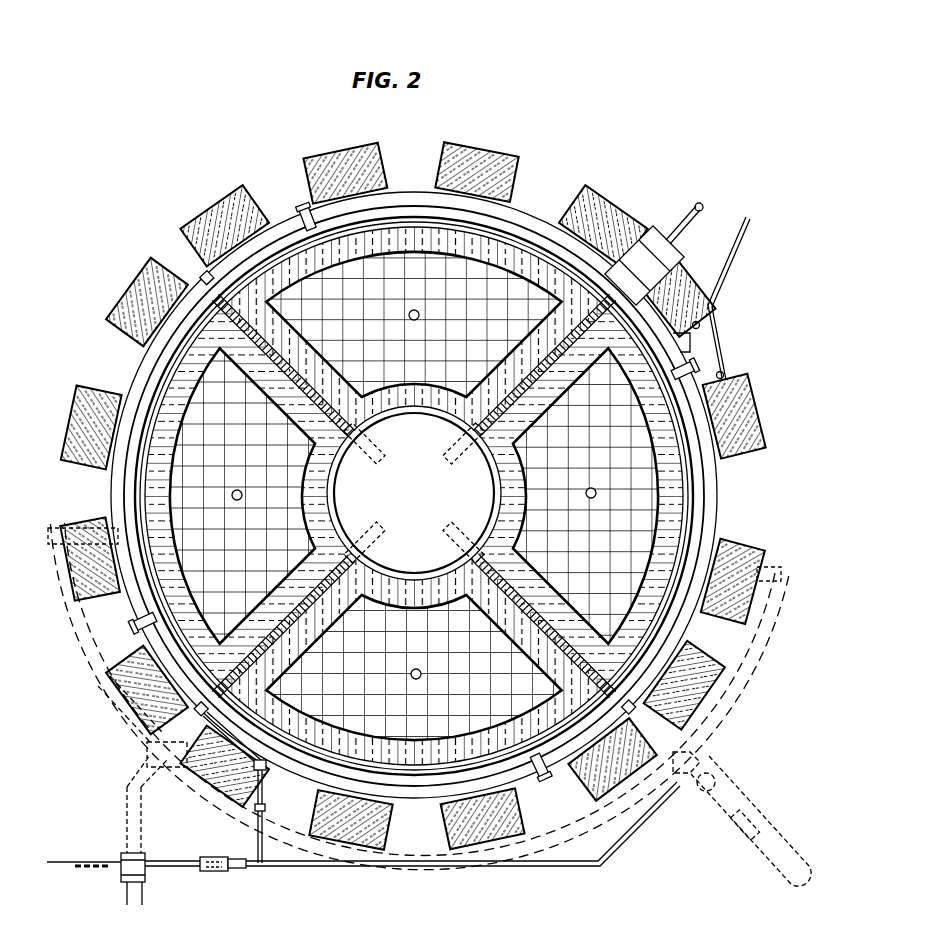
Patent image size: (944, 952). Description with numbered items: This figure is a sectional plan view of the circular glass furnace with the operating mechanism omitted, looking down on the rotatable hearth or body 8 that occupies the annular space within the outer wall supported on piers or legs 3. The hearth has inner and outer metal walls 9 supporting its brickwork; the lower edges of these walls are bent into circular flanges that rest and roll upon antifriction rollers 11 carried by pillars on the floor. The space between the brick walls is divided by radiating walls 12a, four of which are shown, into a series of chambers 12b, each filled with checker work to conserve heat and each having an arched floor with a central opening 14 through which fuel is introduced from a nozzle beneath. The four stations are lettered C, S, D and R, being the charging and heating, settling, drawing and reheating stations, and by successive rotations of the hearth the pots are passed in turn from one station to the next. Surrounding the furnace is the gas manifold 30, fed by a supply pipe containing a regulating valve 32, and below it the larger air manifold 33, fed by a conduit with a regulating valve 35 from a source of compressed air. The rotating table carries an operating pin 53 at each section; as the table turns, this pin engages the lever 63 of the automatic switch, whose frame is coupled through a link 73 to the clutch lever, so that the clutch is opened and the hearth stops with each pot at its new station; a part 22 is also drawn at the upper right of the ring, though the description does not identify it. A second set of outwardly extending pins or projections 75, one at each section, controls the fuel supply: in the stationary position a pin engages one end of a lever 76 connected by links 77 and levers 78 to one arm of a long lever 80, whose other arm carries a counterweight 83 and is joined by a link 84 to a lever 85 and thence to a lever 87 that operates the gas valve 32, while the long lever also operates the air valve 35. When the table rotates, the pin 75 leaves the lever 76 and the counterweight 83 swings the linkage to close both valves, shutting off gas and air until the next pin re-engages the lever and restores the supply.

The piers or legs 3 is at (700, 653).
The rotatable hearth or body 8 is at (657, 546).
The inner and outer metal walls 9 is at (716, 513).
The rollers 11 is at (315, 772).
The radiating walls 12a is at (318, 352).
The chambers 12b is at (414, 496).
The central openings 14 is at (414, 310).
The conduit 22 is at (704, 209).
The manifold 30 is at (112, 708).
The regulating valve 32 is at (124, 852).
The larger manifold 33 is at (86, 659).
The regulating valve 35 is at (706, 770).
The operating pin 53 is at (540, 780).
The lever 63 is at (700, 338).
The link 73 is at (750, 222).
The pins or projections 75 is at (636, 712).
The lever 76 is at (216, 729).
The links 77 is at (262, 808).
The levers 78 is at (266, 777).
The long lever 80 is at (335, 867).
The counterweight 83 is at (213, 857).
The link 84 is at (243, 869).
The lever 85 is at (173, 867).
The lever 87 is at (52, 862).